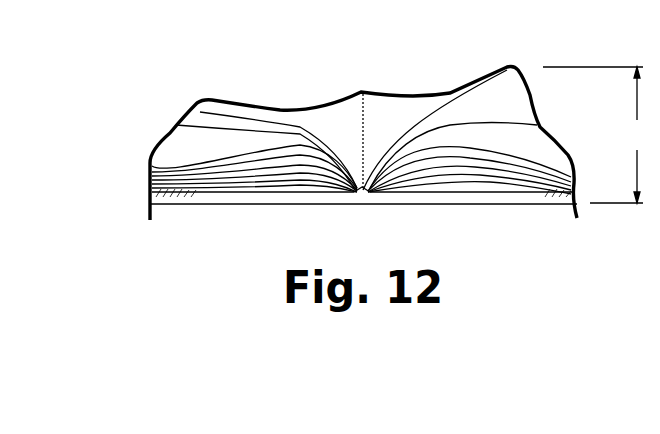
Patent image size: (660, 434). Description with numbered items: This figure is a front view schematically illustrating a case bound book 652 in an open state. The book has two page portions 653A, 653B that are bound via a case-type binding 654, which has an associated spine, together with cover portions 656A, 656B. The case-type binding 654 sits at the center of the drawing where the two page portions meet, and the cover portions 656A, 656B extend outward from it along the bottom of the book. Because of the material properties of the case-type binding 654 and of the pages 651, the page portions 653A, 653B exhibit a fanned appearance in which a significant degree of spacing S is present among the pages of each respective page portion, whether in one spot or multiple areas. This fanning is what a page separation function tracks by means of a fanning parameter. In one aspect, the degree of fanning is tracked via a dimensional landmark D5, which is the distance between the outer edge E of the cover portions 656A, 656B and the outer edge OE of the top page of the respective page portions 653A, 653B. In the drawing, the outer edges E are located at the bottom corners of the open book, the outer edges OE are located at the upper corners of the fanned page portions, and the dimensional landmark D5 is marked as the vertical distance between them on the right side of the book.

The pages 651 is at (150, 163).
The case bound book 652 is at (270, 95).
The page portion 653A is at (197, 103).
The page portion 653B is at (507, 67).
The case-type binding 654 is at (361, 190).
The cover portion 656A is at (190, 203).
The cover portion 656B is at (535, 203).
The outer edge of a top page OE is at (173, 133).
The spacing S is at (207, 148).
The outer edge E is at (148, 204).
The dimensional landmark D5 is at (595, 135).